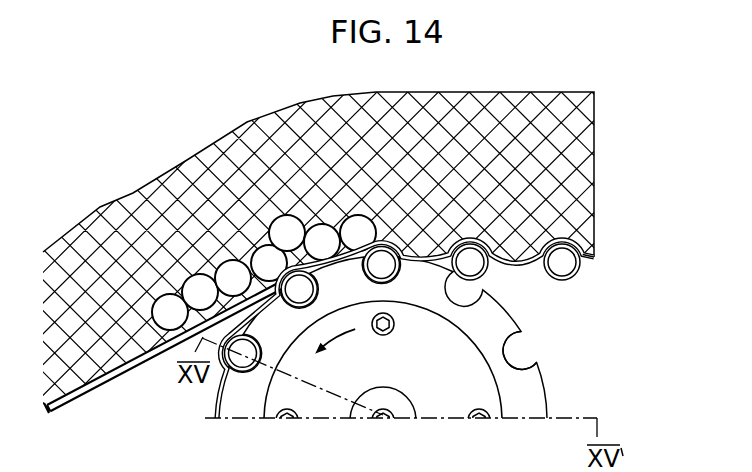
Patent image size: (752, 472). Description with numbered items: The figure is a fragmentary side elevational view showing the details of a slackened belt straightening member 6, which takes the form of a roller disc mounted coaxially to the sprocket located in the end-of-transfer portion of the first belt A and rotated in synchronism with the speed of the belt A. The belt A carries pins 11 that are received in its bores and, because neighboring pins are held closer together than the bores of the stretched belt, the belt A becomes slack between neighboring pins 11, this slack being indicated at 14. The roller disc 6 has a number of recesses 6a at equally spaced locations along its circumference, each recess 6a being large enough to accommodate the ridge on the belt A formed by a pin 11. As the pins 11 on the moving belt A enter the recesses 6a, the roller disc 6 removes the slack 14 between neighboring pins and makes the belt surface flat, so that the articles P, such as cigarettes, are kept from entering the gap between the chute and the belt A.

The belt straightening member 6 is at (534, 387).
The recess 6a is at (525, 348).
The pin 11 is at (565, 271).
The slack 14 is at (523, 268).
The articles P is at (353, 227).
The first belt A is at (594, 258).